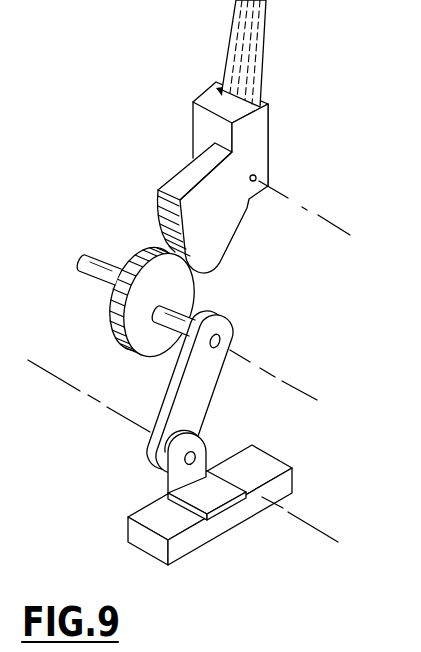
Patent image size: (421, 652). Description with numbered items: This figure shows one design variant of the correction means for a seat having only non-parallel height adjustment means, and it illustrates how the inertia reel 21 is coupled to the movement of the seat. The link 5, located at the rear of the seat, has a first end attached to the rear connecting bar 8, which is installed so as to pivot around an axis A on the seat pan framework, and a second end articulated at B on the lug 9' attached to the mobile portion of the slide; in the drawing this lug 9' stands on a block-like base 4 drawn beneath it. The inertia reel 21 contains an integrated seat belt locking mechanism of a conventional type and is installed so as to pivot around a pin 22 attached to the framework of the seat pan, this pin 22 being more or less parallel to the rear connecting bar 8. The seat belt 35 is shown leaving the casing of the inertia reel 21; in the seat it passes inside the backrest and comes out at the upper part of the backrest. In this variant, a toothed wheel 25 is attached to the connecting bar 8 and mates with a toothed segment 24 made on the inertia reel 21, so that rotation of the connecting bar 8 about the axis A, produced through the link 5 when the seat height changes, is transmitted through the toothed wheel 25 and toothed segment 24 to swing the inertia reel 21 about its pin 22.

The seat belt 35 is at (252, 66).
The inertia reel 21 is at (258, 143).
The pin 22 is at (333, 221).
The toothed segment 24 is at (227, 220).
The rear connecting bar 8 is at (80, 271).
The toothed wheel 25 is at (150, 340).
The link 5 is at (236, 333).
The lug 9' is at (212, 461).
The base 4 is at (145, 540).
The axis A is at (293, 388).
The articulation point B is at (328, 531).